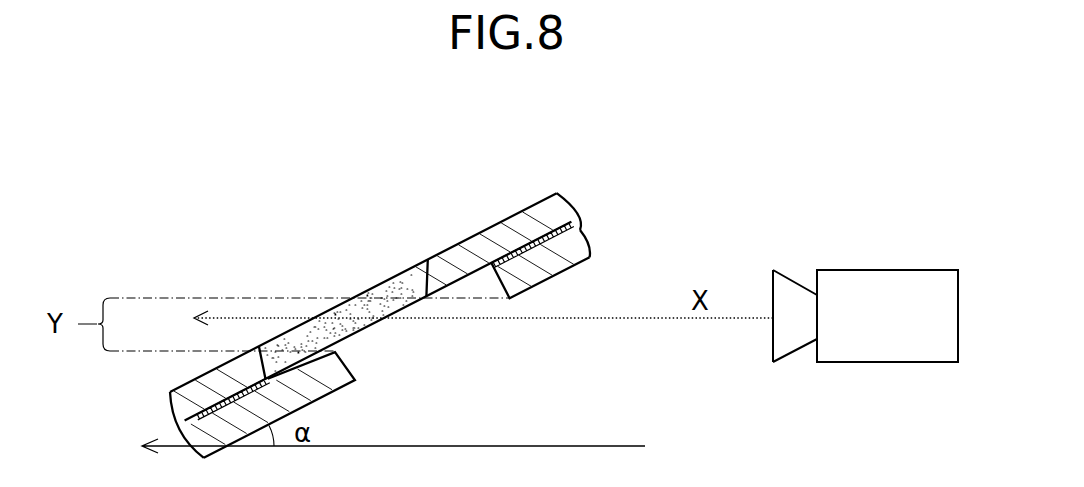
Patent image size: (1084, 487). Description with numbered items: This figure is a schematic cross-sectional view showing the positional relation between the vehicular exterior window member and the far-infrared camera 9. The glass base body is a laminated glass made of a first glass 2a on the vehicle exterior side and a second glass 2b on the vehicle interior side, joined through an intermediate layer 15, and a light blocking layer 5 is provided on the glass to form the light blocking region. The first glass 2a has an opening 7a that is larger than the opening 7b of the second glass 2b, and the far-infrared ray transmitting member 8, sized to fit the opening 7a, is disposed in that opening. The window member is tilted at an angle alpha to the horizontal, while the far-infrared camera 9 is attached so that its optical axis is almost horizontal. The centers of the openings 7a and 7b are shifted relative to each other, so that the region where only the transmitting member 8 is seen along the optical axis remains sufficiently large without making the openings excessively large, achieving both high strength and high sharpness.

The first glass 2a is at (553, 193).
The second glass 2b is at (582, 243).
The light blocking layer 5 is at (545, 265).
The opening of first glass 7a is at (428, 259).
The opening of second glass 7b is at (353, 363).
The far-infrared ray transmitting member 8 is at (390, 277).
The far-infrared camera 9 is at (878, 270).
The intermediate layer 15 is at (572, 232).